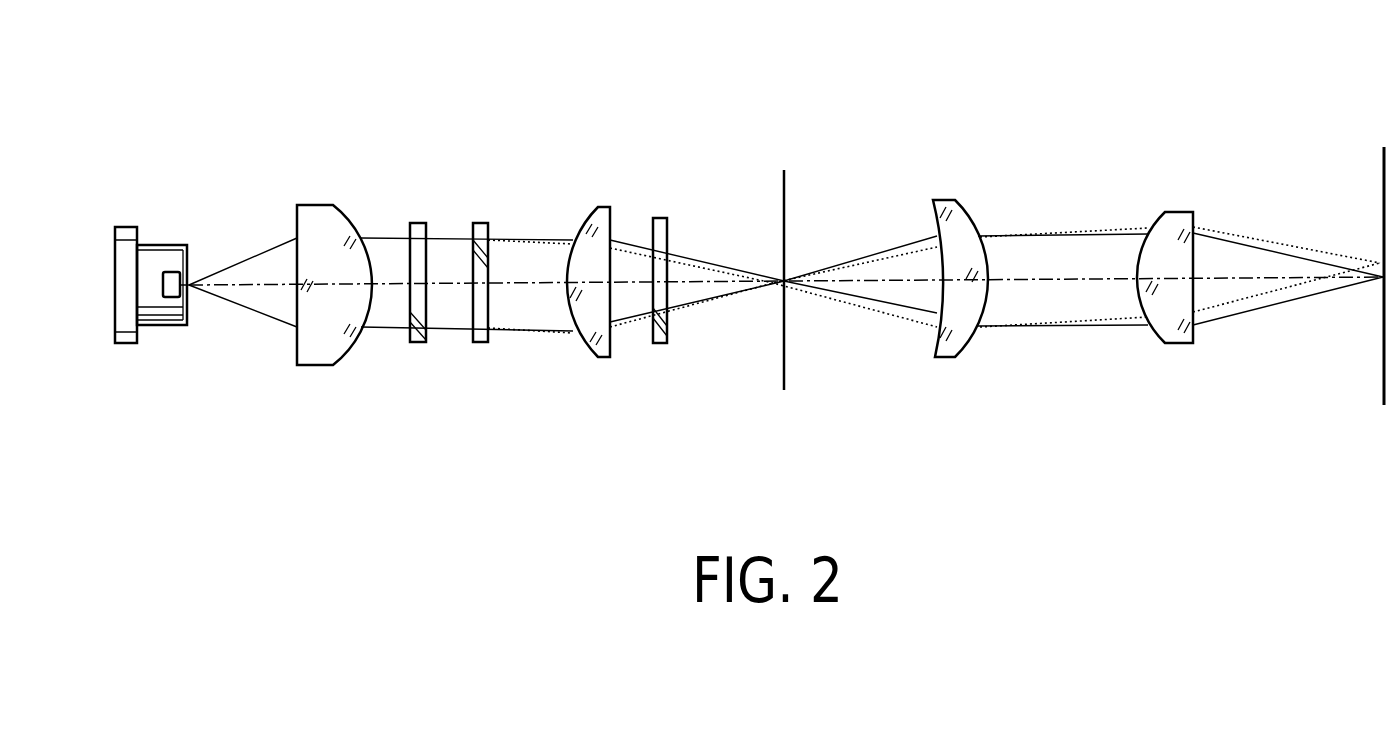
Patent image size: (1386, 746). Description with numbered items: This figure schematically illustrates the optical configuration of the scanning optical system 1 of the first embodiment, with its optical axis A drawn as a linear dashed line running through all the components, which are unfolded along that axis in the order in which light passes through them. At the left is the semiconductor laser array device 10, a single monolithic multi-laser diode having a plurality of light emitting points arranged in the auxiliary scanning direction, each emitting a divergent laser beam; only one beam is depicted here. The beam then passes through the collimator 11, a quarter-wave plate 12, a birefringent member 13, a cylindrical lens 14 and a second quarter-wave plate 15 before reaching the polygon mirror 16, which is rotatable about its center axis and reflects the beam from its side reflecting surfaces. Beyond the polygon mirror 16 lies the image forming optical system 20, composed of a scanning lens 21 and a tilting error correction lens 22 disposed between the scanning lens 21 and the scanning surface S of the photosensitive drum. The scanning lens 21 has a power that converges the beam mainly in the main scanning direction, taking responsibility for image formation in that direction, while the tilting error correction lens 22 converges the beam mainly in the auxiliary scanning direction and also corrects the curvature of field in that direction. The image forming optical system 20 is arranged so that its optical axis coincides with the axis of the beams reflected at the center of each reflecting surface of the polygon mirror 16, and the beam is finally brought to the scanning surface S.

The scanning optical system 1 is at (1170, 60).
The semiconductor laser array device 10 is at (171, 327).
The collimator 11 is at (303, 222).
The quarter-wave plate 12 is at (412, 222).
The birefringent member 13 is at (476, 222).
The cylindrical lens 14 is at (583, 308).
The quarter-wave plate 15 is at (667, 232).
The polygon mirror 16 is at (787, 357).
The image forming optical system 20 is at (1205, 127).
The scanning lens 21 is at (947, 198).
The tilting error correction lens 22 is at (1178, 212).
The optical axis A is at (1057, 285).
The scanning surface S is at (1383, 192).